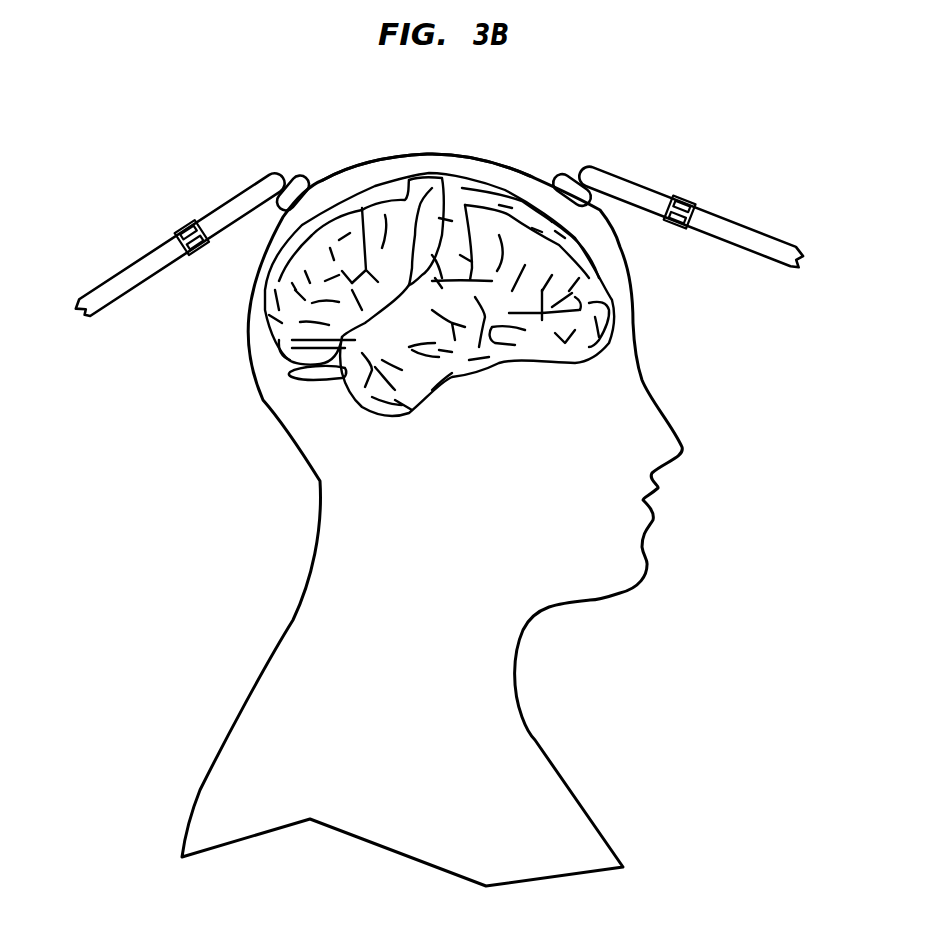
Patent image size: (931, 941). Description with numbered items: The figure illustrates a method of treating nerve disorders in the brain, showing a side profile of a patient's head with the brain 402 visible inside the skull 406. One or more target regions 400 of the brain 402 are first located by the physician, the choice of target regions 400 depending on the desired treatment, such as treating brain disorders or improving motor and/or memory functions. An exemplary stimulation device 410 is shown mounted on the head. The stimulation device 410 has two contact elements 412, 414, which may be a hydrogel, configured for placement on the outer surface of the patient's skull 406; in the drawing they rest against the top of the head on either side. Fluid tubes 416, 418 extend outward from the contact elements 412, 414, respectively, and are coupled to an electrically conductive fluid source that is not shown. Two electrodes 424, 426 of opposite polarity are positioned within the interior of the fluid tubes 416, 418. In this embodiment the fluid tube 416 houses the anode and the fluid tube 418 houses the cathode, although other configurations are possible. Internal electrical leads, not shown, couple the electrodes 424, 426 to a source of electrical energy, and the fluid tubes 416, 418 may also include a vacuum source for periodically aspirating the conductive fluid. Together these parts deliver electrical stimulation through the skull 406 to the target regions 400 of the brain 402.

The target regions 400 is at (361, 278).
The brain 402 is at (580, 364).
The skull 406 is at (503, 166).
The stimulation device 410 is at (210, 148).
The contact element 412 is at (305, 182).
The contact element 414 is at (556, 180).
The fluid tube 416 is at (95, 292).
The fluid tube 418 is at (780, 242).
The electrode 424 is at (193, 240).
The electrode 426 is at (686, 205).